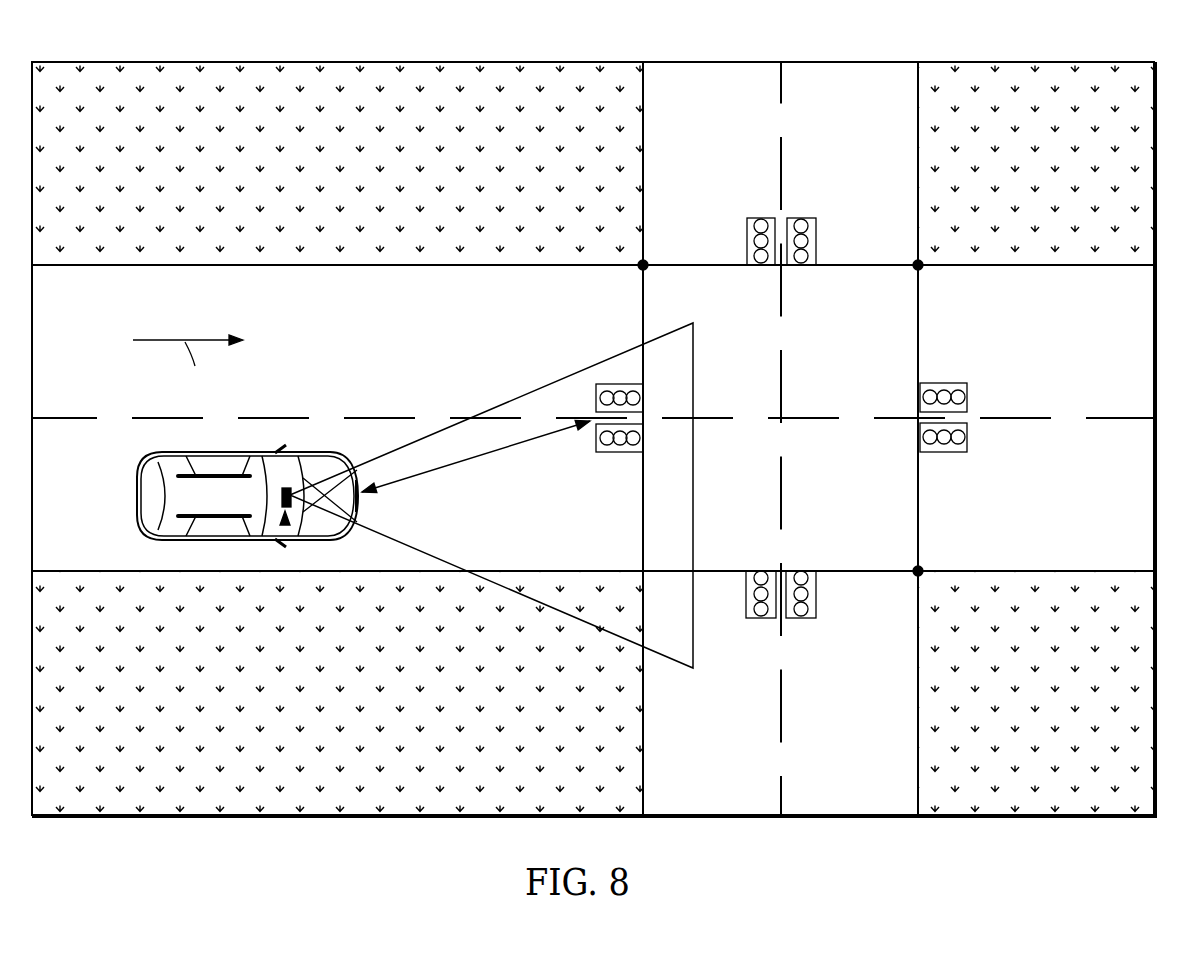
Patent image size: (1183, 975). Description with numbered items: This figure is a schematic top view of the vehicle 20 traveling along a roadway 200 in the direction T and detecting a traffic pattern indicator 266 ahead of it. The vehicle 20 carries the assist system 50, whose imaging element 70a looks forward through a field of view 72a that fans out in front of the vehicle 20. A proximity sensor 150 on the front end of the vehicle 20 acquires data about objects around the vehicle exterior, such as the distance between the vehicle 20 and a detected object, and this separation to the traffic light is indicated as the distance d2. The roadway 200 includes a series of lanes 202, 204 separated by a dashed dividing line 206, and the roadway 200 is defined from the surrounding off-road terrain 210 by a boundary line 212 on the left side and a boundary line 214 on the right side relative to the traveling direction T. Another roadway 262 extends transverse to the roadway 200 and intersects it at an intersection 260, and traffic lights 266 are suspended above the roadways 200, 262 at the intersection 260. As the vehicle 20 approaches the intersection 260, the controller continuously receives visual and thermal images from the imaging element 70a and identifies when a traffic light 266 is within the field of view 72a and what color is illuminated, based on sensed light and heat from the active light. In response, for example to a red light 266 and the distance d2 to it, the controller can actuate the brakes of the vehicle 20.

The vehicle 20 is at (231, 556).
The assist system 50 is at (268, 497).
The imaging element 70a is at (285, 528).
The field of view 72a is at (522, 428).
The proximity sensor 150 is at (362, 497).
The roadway 200 is at (160, 229).
The lane 202 is at (101, 361).
The lane 204 is at (101, 528).
The dashed dividing line 206 is at (83, 422).
The off-road terrain 210 is at (381, 184).
The boundary line 212 is at (258, 268).
The boundary line 214 is at (96, 573).
The intersection 260 is at (631, 255).
The roadway 262 is at (872, 226).
The traffic pattern indicator 266 is at (603, 382).
The distance to traffic signal d2 is at (464, 460).